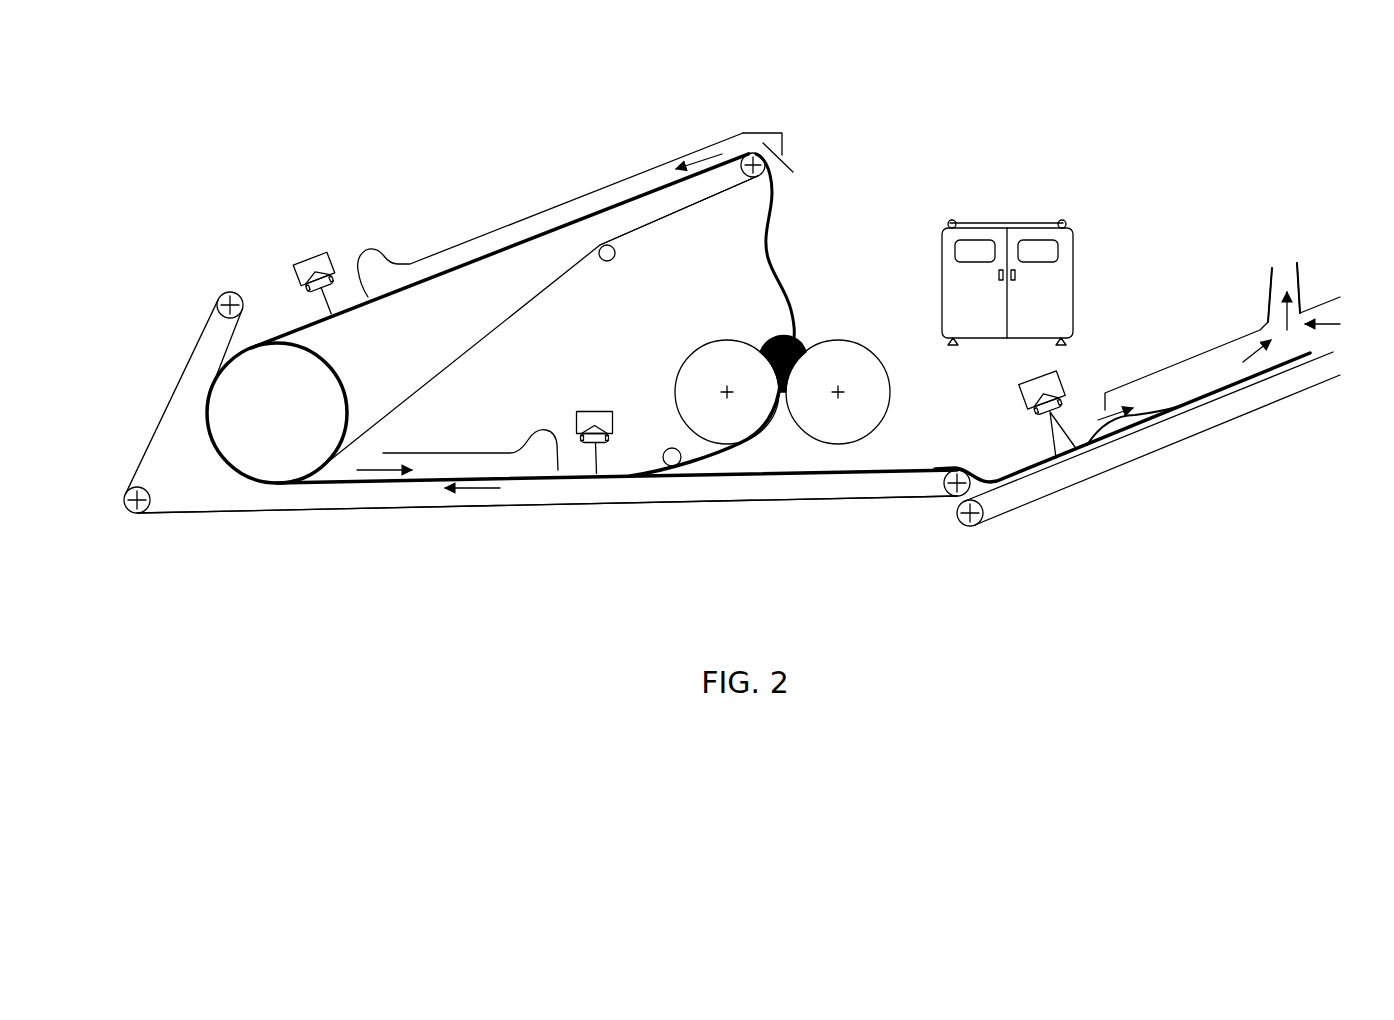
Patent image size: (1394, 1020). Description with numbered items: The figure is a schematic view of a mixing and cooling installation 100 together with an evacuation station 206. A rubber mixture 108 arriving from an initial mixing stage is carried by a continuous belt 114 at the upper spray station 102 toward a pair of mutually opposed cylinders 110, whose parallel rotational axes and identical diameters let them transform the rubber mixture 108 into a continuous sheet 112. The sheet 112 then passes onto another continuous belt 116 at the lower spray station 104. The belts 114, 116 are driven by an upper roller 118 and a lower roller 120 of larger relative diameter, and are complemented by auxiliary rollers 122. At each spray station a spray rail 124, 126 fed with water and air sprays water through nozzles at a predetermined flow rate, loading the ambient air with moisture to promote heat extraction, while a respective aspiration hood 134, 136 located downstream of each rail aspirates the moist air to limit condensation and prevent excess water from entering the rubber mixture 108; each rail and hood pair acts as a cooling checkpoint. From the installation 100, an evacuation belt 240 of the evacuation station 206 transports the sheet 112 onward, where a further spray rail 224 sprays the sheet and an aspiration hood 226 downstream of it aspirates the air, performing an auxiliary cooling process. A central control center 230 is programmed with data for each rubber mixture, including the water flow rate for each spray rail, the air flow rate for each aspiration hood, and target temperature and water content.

The mixing and cooling installation 100 is at (404, 132).
The upper spray station 102 is at (582, 167).
The lower spray station 104 is at (620, 549).
The rubber mixture 108 is at (796, 337).
The cylinders 110 is at (807, 420).
The continuous sheet 112 is at (700, 463).
The continuous belt 114 is at (473, 343).
The continuous belt 116 is at (822, 500).
The upper roller 118 is at (759, 152).
The lower roller 120 is at (283, 447).
The auxiliary rollers 122 is at (222, 295).
The spray rail 124 is at (313, 262).
The spray rail 126 is at (595, 406).
The aspiration hood 134 is at (502, 232).
The aspiration hood 136 is at (510, 450).
The evacuation station 206 is at (1314, 260).
The spray rail 224 is at (1063, 382).
The aspiration hood 226 is at (1280, 273).
The central control center 230 is at (1000, 227).
The evacuation belt 240 is at (1333, 352).